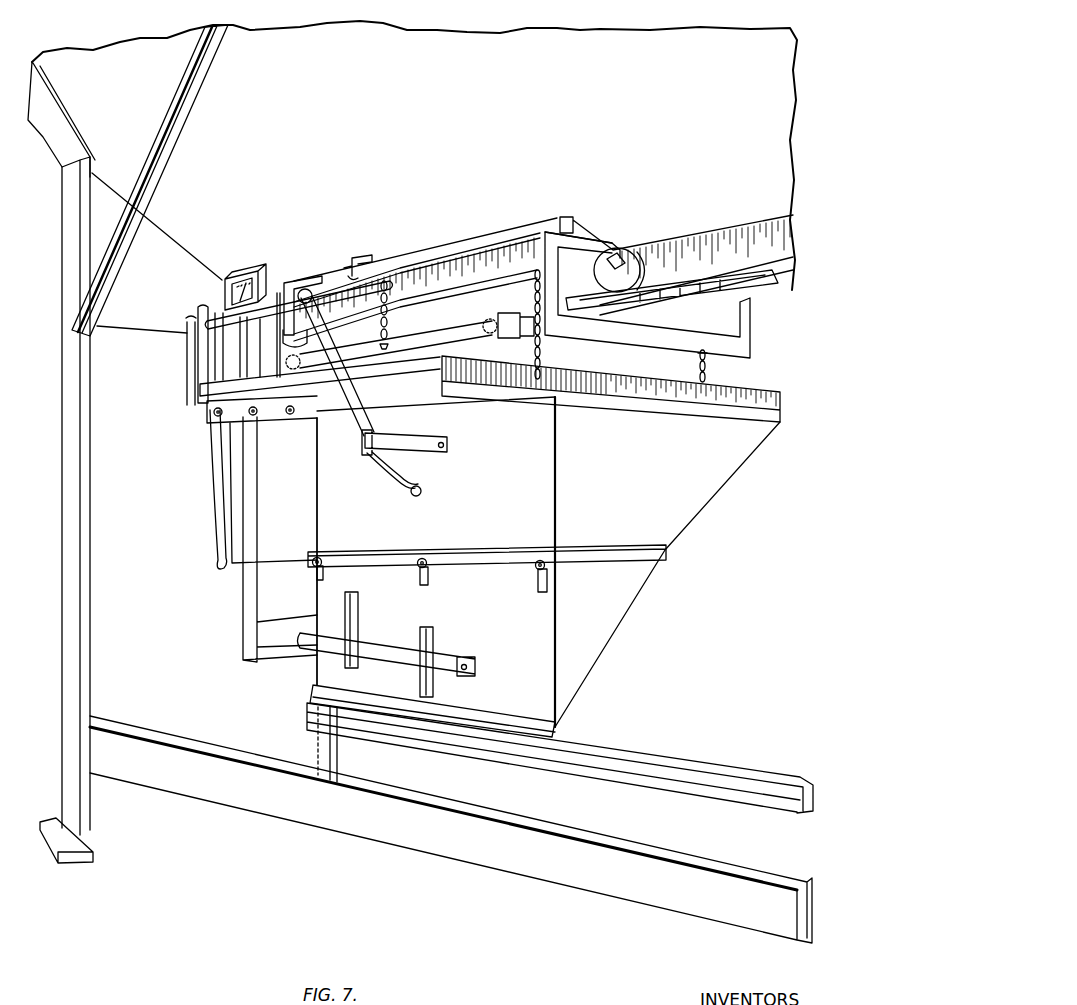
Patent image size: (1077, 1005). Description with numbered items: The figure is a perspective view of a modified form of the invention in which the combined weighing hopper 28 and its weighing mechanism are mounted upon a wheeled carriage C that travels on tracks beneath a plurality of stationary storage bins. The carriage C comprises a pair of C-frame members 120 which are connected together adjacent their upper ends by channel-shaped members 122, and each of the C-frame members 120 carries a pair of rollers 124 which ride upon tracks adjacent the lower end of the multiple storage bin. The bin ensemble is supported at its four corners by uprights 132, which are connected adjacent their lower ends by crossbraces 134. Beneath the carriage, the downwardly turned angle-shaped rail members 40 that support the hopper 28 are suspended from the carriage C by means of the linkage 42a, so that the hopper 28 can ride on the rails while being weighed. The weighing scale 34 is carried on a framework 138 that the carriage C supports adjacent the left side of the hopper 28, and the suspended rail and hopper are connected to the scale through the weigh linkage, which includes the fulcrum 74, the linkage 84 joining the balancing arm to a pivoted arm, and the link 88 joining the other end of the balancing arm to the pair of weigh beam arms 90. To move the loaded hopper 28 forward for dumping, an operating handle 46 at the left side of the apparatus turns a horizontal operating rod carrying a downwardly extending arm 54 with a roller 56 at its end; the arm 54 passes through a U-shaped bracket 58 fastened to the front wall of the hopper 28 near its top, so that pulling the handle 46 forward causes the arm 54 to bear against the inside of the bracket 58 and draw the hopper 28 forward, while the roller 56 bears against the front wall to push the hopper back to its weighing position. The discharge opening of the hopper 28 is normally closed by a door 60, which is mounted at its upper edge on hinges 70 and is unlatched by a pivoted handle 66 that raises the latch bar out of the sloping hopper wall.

The weighing hopper 28 is at (680, 515).
The weighing scale 34 is at (232, 528).
The rail members 40 is at (210, 412).
The linkage 42a is at (541, 358).
The operating handle 46 is at (212, 488).
The arm 54 is at (398, 482).
The roller 56 is at (414, 496).
The U-shaped bracket 58 is at (364, 447).
The door 60 is at (540, 688).
The pivoted handle 66 is at (378, 648).
The hinges 70 is at (316, 580).
The fulcrum 74 is at (362, 262).
The linkage 84 is at (240, 355).
The link 88 is at (390, 317).
The weigh beam arms 90 is at (445, 328).
The C-frame members 120 is at (288, 283).
The channel-shaped members 122 is at (449, 247).
The rollers 124 is at (303, 290).
The uprights 132 is at (90, 677).
The crossbraces 134 is at (752, 768).
The framework 138 is at (252, 626).
The wheeled carriage C is at (599, 231).